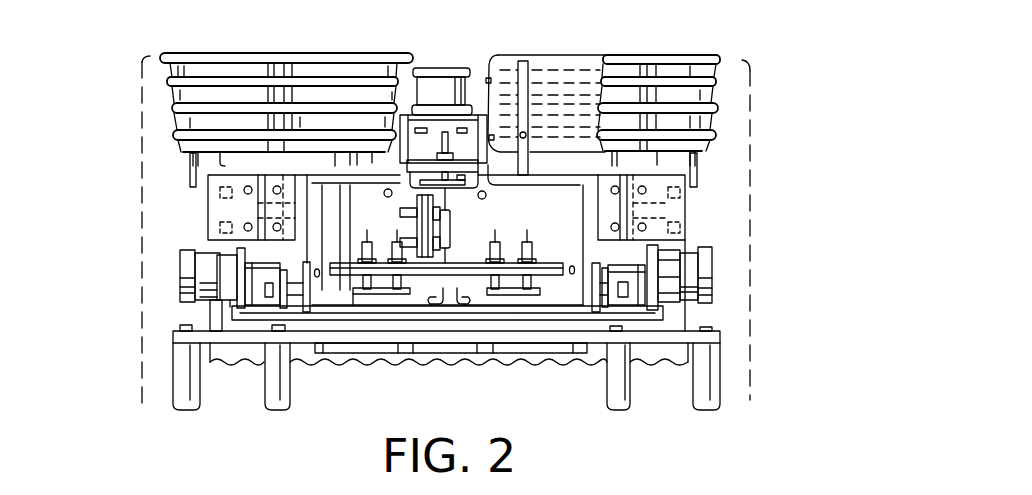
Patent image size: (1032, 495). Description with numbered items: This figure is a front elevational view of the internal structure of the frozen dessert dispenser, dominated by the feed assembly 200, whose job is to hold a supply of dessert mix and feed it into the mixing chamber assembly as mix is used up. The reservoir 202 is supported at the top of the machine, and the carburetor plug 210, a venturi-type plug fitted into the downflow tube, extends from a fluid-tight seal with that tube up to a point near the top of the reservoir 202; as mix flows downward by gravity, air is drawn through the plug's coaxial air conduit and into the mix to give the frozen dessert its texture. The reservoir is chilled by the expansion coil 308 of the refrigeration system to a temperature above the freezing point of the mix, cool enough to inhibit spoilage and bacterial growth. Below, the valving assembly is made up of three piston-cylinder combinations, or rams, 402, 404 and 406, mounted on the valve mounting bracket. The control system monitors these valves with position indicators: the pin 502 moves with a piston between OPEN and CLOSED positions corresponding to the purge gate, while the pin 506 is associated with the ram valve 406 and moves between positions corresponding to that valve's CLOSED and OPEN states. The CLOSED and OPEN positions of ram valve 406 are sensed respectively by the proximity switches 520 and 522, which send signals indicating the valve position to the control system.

The feed assembly 200 is at (160, 50).
The reservoir 202 is at (703, 125).
The expansion coil 308 is at (716, 84).
The carburetor plug 210 is at (528, 62).
The ram 402 is at (441, 70).
The ram valve 404 is at (180, 278).
The ram valve 406 is at (700, 283).
The pin 502 is at (450, 217).
The pin 506 is at (525, 277).
The proximity switch 520 is at (487, 290).
The proximity switch 522 is at (533, 277).